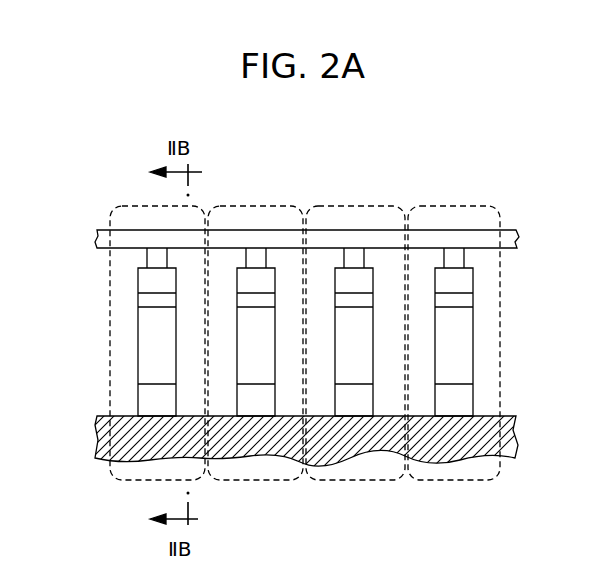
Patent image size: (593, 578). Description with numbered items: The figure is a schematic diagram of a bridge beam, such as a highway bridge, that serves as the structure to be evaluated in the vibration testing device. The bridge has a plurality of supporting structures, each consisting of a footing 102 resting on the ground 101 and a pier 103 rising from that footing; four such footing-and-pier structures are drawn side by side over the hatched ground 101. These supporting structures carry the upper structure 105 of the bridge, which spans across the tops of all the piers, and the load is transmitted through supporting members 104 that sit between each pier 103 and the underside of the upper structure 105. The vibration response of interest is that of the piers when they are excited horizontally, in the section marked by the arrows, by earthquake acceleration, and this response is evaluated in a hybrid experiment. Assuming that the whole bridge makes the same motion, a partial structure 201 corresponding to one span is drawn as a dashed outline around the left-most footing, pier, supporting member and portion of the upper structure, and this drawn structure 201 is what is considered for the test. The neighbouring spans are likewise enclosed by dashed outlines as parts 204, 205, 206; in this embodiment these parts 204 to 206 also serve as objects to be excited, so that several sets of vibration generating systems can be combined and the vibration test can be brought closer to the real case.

The ground 101 is at (343, 440).
The footing 102 is at (462, 401).
The pier 103 is at (462, 338).
The supporting member 104 is at (353, 262).
The upper structure 105 is at (484, 239).
The partial structure 201 is at (118, 206).
The part 204 is at (258, 206).
The part 205 is at (345, 206).
The part 206 is at (450, 206).